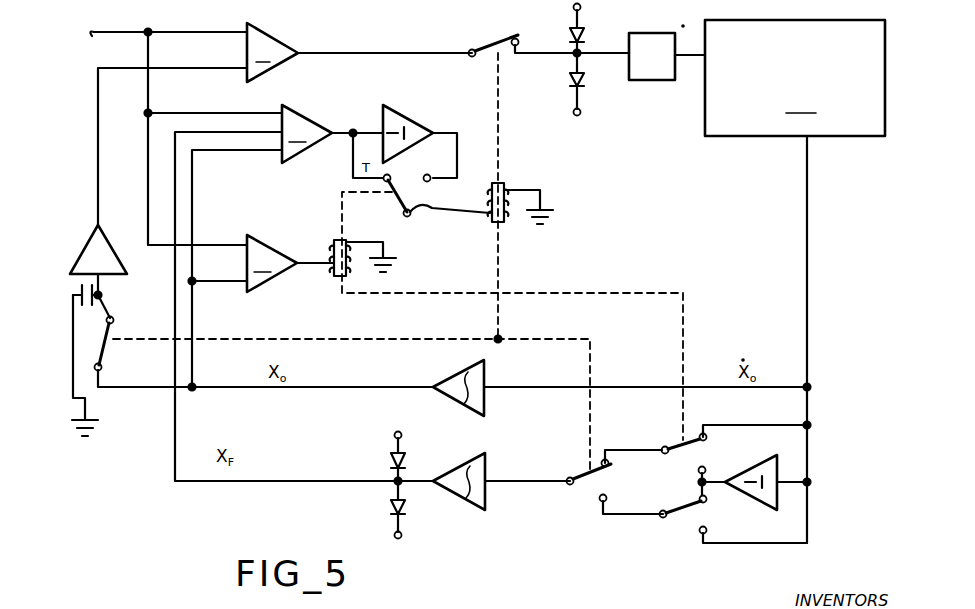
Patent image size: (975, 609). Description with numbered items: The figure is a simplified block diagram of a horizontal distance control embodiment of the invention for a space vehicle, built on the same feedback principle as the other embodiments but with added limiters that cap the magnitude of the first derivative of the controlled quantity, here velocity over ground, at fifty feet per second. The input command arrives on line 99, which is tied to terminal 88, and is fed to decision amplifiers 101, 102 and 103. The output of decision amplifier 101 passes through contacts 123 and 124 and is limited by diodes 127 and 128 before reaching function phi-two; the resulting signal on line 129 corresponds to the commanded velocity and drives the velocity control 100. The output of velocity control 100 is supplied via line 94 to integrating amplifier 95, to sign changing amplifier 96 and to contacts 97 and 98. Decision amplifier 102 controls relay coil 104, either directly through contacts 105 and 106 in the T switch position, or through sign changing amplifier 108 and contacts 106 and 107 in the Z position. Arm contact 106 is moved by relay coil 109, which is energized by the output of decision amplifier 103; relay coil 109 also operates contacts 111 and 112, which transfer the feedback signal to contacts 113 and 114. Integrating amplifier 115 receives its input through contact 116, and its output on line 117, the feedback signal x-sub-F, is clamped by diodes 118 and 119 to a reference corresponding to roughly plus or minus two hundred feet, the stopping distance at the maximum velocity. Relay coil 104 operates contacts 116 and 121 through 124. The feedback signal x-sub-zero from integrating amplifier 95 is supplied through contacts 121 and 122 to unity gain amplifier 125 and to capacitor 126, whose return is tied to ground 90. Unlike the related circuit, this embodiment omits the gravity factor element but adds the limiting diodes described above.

The input terminal 88 is at (712, 6).
The ground 90 is at (92, 432).
The line 94 is at (808, 372).
The integrating amplifier 95 is at (486, 375).
The sign changing amplifier 96 is at (763, 498).
The contact 97 is at (697, 432).
The contact 98 is at (698, 534).
The line 99 is at (130, 30).
The velocity control 100 is at (795, 78).
The decision amplifier 101 is at (272, 52).
The decision amplifier 102 is at (307, 134).
The decision amplifier 103 is at (272, 263).
The relay coil 104 is at (506, 186).
The contact 105 is at (356, 190).
The arm contact 106 is at (424, 214).
The contact 107 is at (431, 181).
The sign changing amplifier 108 is at (416, 118).
The relay coil 109 is at (333, 242).
The contact 111 is at (660, 440).
The contact 112 is at (690, 510).
The contact 113 is at (596, 455).
The contact 114 is at (598, 503).
The integrating amplifier 115 is at (468, 510).
The contact 116 is at (578, 472).
The line 117 is at (297, 484).
The clamp diode 118 is at (390, 458).
The clamp diode 119 is at (390, 504).
The contact 121 is at (108, 340).
The contact 122 is at (114, 314).
The contact 123 is at (476, 45).
The contact 124 is at (519, 38).
The unity gain amplifier 125 is at (106, 245).
The capacitor 126 is at (104, 292).
The limiting diode 127 is at (585, 30).
The limiting diode 128 is at (584, 84).
The line 129 is at (687, 62).